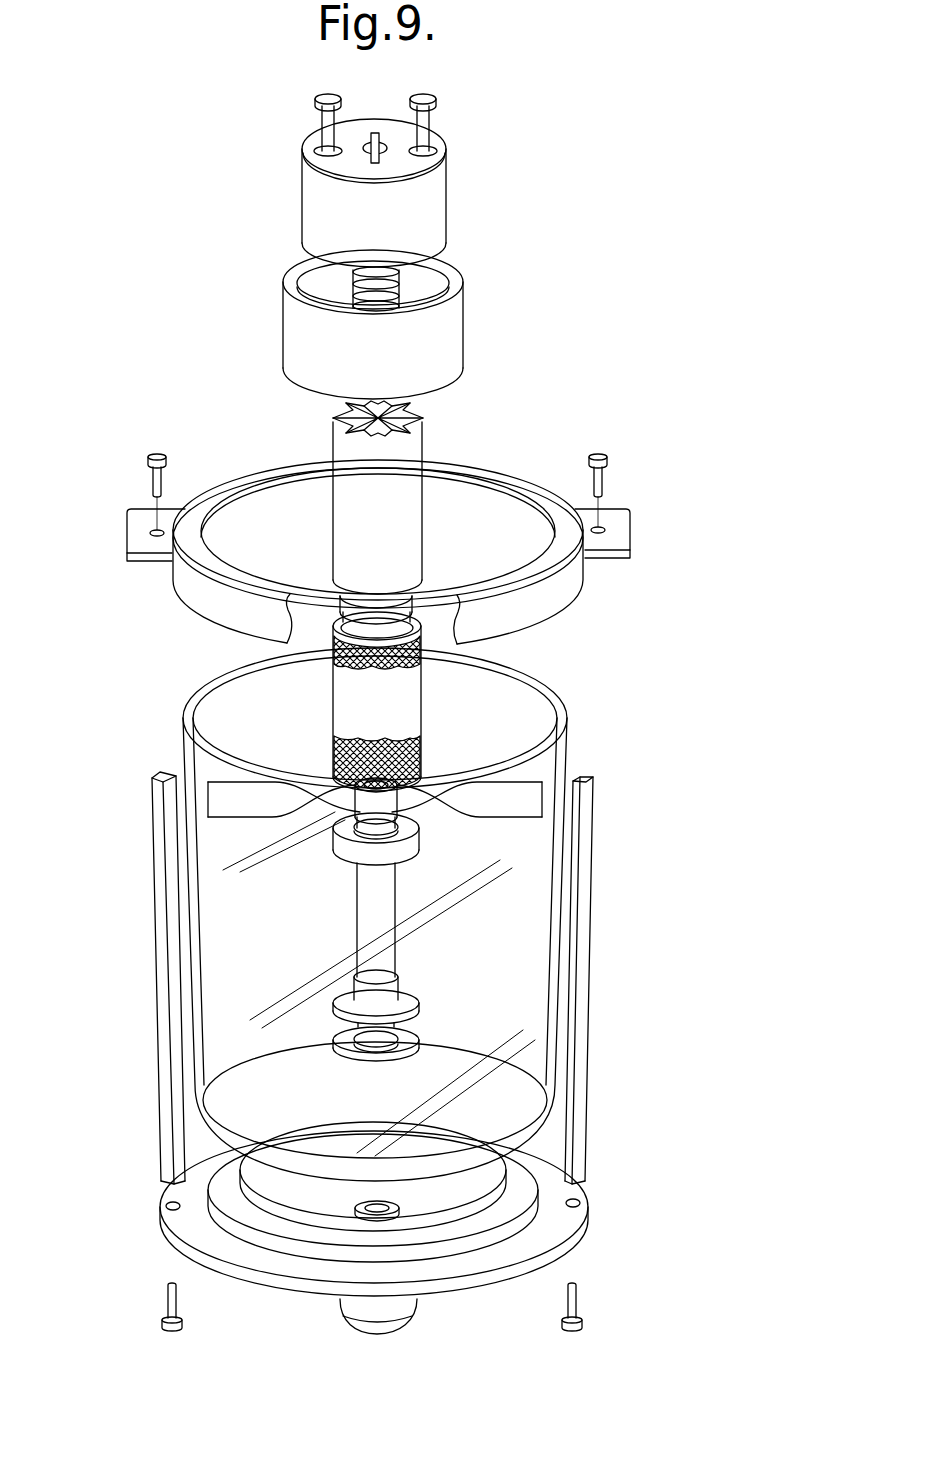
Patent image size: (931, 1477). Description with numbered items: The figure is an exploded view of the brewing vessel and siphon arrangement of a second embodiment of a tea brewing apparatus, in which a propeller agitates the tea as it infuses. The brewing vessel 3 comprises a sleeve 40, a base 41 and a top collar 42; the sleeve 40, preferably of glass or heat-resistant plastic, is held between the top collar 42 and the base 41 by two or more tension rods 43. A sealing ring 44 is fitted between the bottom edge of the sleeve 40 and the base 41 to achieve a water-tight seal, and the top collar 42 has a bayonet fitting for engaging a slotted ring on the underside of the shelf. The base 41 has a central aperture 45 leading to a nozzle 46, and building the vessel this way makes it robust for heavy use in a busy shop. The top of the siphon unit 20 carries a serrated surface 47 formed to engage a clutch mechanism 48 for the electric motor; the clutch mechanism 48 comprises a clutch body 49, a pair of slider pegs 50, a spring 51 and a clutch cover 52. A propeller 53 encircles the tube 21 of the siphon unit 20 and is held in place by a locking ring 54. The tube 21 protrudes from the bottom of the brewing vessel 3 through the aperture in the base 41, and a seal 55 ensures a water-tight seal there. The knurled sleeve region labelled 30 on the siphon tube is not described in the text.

The brewing vessel 3 is at (152, 990).
The siphon unit 20 is at (292, 424).
The tube 21 is at (373, 930).
The rotor sleeve 30 is at (420, 740).
The sleeve 40 is at (517, 945).
The base 41 is at (567, 1242).
The top collar 42 is at (567, 588).
The tension rods 43 is at (167, 1108).
The sealing ring 44 is at (517, 1190).
The central aperture 45 is at (372, 1221).
The nozzle 46 is at (398, 1307).
The serrated surface 47 is at (425, 425).
The clutch mechanism 48 is at (268, 246).
The clutch body 49 is at (425, 203).
The slider pegs 50 is at (438, 104).
The spring 51 is at (400, 283).
The clutch cover 52 is at (438, 349).
The propeller 53 is at (503, 803).
The locking ring 54 is at (358, 856).
The seal 55 is at (408, 1025).